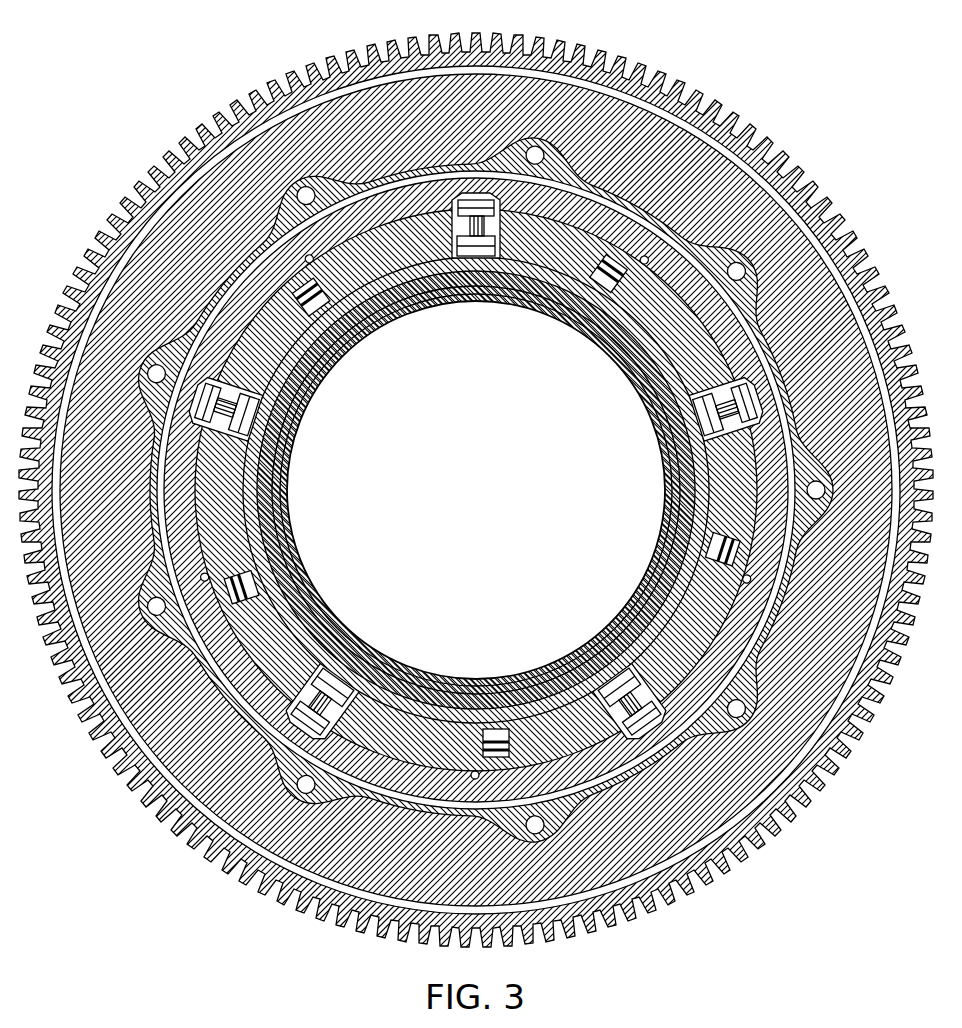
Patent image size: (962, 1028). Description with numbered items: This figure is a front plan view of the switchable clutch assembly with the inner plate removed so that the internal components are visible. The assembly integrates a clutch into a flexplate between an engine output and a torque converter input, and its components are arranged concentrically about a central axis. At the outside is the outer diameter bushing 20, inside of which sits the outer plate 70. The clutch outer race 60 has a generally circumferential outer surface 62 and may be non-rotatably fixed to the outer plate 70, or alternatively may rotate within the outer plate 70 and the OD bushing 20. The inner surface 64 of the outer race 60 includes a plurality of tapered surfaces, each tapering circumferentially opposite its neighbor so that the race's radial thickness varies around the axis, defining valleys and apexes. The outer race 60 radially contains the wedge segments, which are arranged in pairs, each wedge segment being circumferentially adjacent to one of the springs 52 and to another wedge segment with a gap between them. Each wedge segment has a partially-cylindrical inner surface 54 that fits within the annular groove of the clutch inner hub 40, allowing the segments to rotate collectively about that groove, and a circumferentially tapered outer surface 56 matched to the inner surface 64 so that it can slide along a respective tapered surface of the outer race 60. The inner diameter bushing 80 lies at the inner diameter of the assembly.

The outer diameter (OD) bushing 20 is at (815, 232).
The clutch inner hub 40 is at (293, 628).
The spring 52 is at (207, 397).
The inner surface 54 is at (273, 393).
The outer surface 56 is at (273, 305).
The clutch outer race 60 is at (843, 288).
The outer surface 62 is at (420, 178).
The inner surface 64 is at (585, 215).
The outer plate 70 is at (722, 180).
The inner diameter (ID) bushing 80 is at (395, 662).